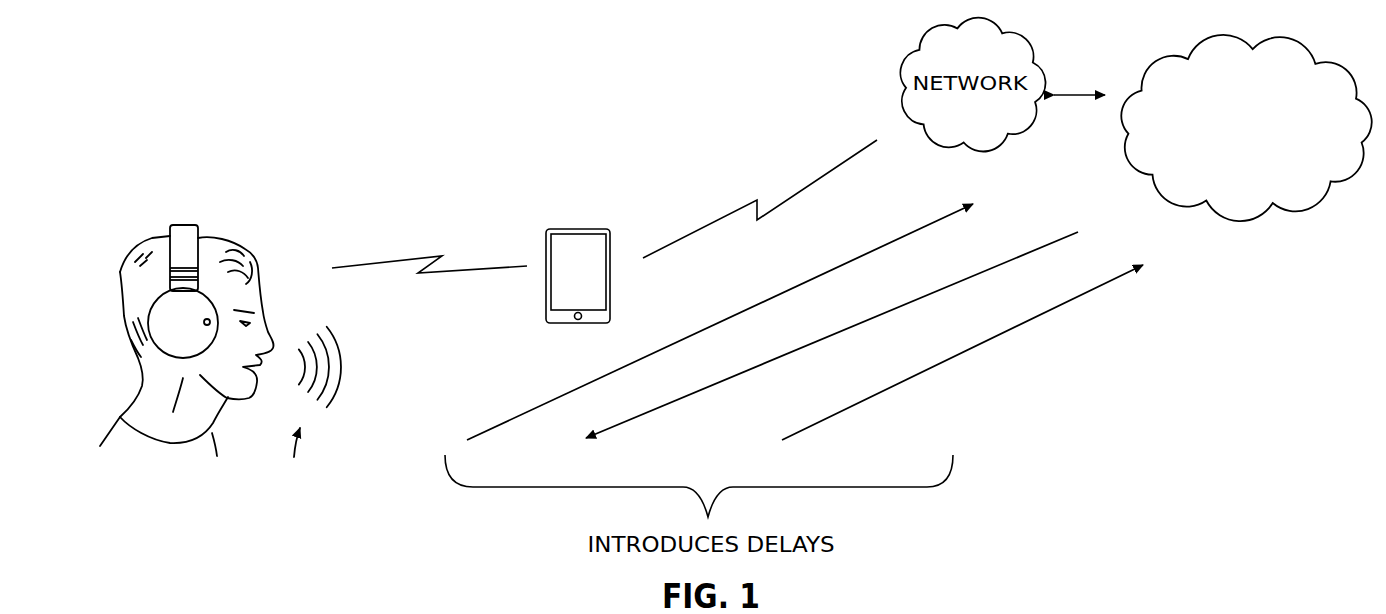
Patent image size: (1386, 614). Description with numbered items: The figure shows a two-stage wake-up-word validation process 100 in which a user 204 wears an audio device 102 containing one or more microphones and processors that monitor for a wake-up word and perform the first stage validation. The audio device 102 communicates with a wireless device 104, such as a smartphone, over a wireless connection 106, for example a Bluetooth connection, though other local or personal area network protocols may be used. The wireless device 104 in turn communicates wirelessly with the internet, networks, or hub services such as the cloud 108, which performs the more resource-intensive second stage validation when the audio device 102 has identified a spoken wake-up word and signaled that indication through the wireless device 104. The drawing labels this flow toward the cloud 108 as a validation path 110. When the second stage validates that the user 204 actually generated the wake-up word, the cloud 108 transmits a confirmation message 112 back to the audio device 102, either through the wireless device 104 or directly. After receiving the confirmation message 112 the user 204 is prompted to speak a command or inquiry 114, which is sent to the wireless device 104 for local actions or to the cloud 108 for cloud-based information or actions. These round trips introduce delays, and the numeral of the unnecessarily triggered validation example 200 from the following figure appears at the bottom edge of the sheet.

The two-stage WUW validation process 100 is at (131, 112).
The audio device 102 is at (183, 222).
The wireless device 104 is at (582, 229).
The wireless connection 106 is at (410, 256).
The cloud 108 is at (1242, 219).
The validation path 110 is at (897, 240).
The confirmation message 112 is at (1027, 253).
The inquiry 114 is at (1033, 321).
The user 204 is at (126, 271).
The unnecessarily triggered two-stage WUW validation process 200 is at (300, 613).